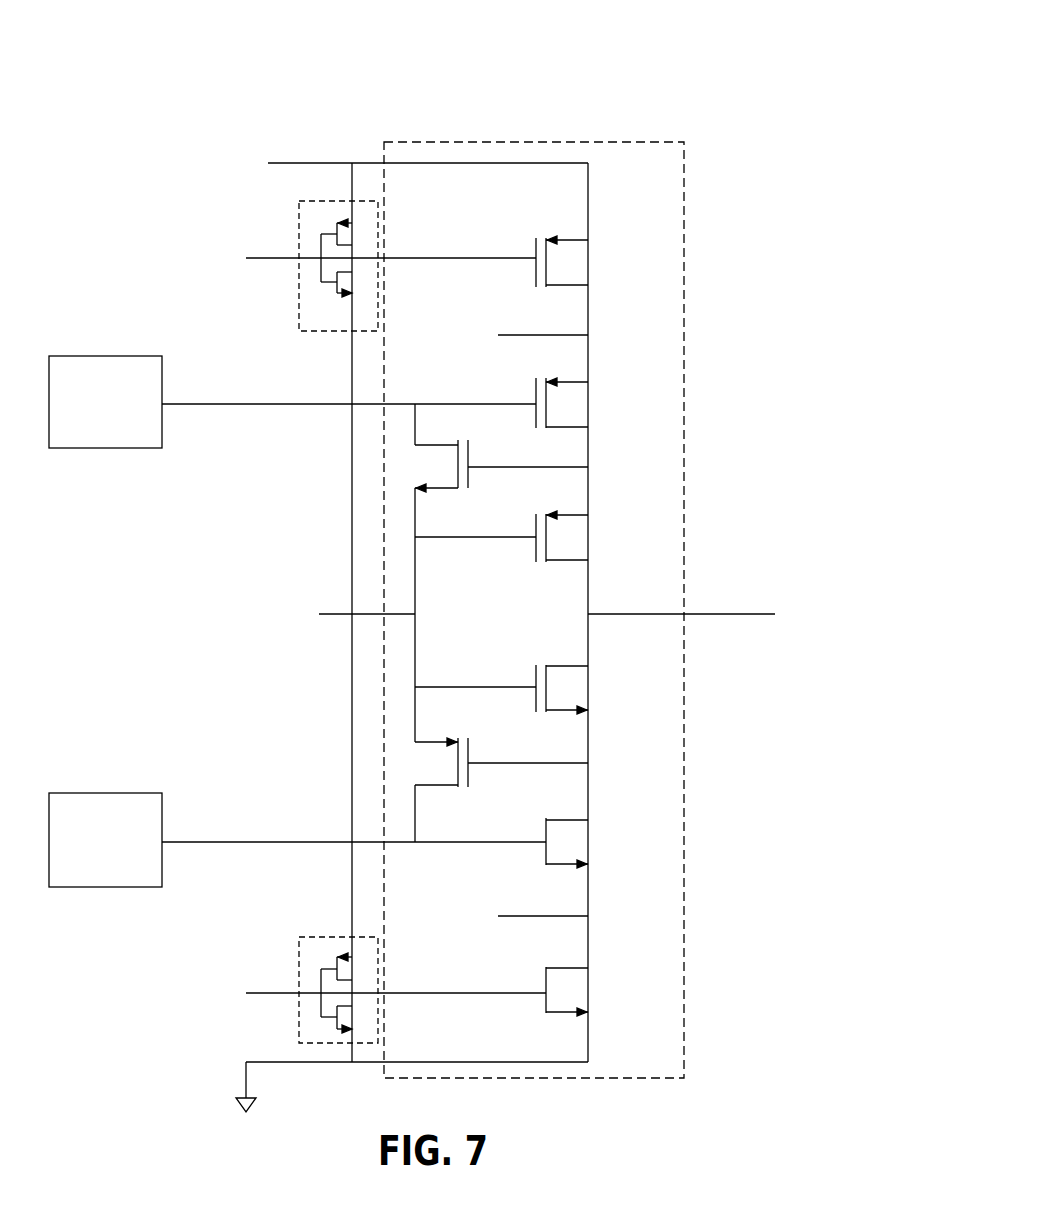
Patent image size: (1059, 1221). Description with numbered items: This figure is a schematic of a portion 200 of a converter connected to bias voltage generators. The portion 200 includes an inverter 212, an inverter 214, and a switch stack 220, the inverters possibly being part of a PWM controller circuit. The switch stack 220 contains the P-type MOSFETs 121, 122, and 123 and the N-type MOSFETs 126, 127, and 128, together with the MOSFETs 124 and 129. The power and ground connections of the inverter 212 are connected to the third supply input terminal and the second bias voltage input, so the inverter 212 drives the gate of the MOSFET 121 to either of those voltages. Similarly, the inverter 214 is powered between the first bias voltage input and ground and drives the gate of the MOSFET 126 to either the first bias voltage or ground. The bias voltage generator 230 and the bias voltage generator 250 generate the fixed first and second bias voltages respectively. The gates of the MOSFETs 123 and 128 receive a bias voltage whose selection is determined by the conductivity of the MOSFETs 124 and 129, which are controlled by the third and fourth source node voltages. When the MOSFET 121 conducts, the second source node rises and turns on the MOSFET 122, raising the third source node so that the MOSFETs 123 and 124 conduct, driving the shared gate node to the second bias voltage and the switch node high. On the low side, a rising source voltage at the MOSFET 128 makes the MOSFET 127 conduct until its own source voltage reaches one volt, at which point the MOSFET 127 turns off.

The portion of a converter 200 is at (148, 100).
The inverter 212 is at (299, 221).
The inverter 214 is at (299, 957).
The switch stack 220 is at (684, 188).
The bias voltage generator 230 is at (93, 793).
The bias voltage generator 250 is at (93, 356).
The P-type MOSFET 121 is at (570, 260).
The P-type MOSFET 122 is at (570, 410).
The P-type MOSFET 123 is at (570, 537).
The MOSFET 124 is at (447, 465).
The N-type MOSFET 126 is at (570, 992).
The N-type MOSFET 127 is at (570, 840).
The N-type MOSFET 128 is at (570, 686).
The MOSFET 129 is at (447, 763).